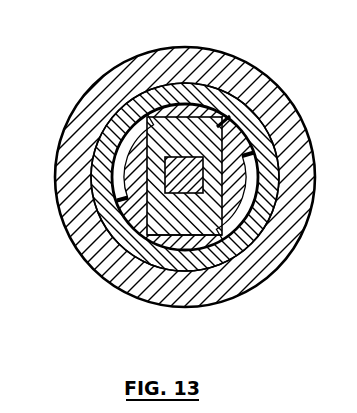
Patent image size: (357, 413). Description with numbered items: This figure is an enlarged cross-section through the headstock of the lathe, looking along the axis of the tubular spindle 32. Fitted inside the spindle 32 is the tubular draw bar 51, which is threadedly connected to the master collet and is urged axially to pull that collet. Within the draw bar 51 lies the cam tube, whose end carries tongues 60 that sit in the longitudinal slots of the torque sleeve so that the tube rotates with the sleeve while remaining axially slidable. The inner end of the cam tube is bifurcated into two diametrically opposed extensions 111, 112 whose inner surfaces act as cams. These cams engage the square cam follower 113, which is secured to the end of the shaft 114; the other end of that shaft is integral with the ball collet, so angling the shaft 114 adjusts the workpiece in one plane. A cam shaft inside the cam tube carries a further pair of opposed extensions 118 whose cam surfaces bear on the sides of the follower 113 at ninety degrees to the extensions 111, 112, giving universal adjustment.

The spindle 32 is at (107, 84).
The draw bar 51 is at (152, 92).
The tongues 60 is at (110, 152).
The extension 111 is at (178, 206).
The extension 112 is at (184, 240).
The cam follower 113 is at (225, 117).
The shaft 114 is at (232, 236).
The extension 118 is at (122, 197).